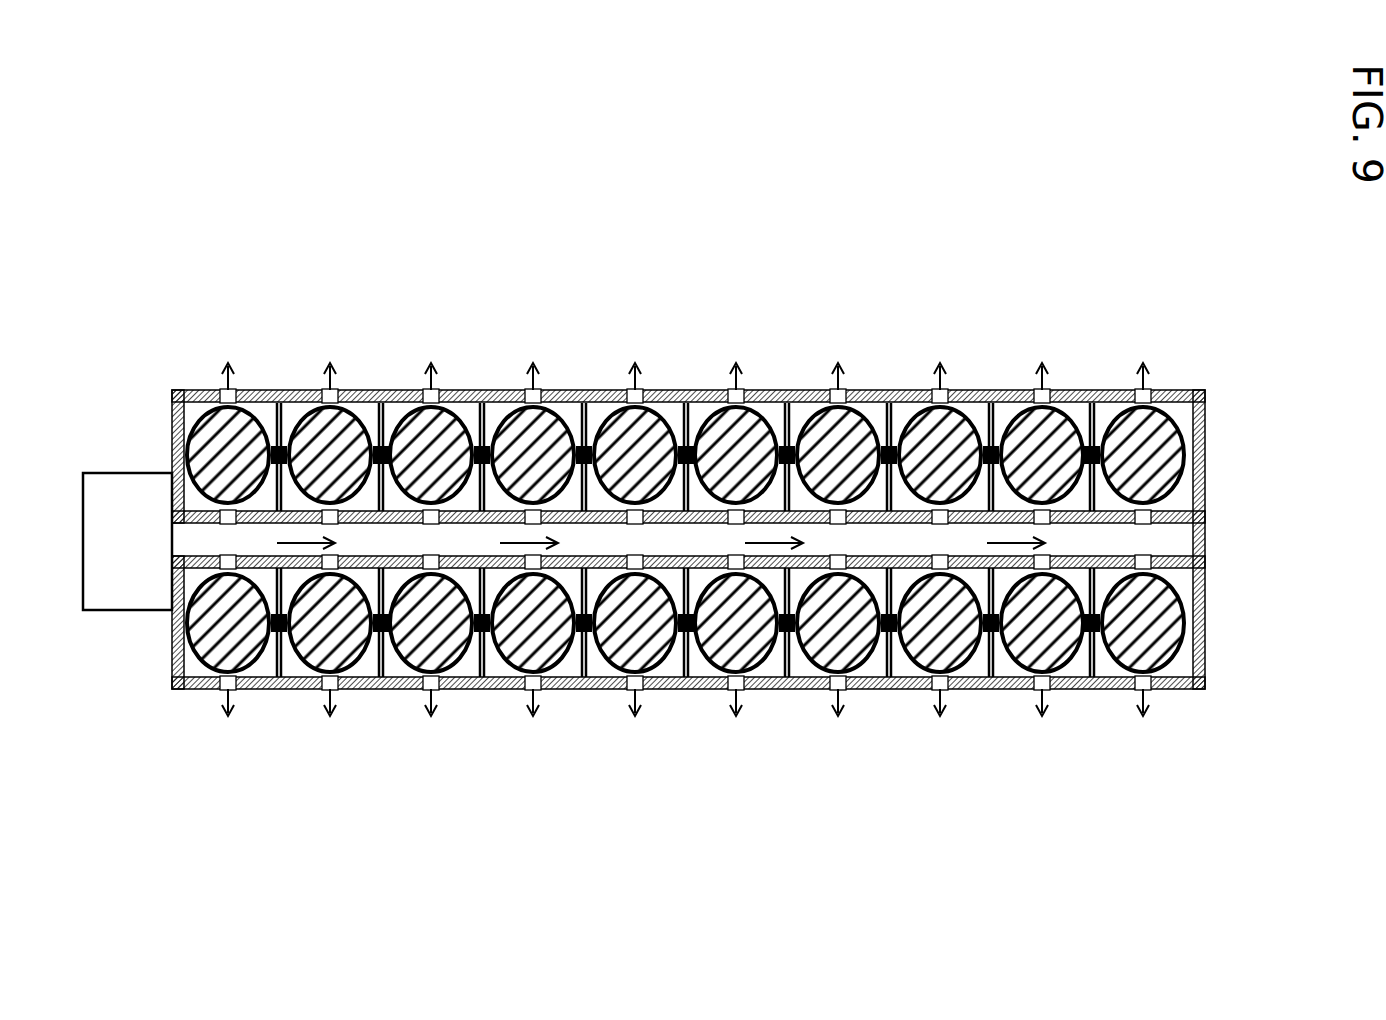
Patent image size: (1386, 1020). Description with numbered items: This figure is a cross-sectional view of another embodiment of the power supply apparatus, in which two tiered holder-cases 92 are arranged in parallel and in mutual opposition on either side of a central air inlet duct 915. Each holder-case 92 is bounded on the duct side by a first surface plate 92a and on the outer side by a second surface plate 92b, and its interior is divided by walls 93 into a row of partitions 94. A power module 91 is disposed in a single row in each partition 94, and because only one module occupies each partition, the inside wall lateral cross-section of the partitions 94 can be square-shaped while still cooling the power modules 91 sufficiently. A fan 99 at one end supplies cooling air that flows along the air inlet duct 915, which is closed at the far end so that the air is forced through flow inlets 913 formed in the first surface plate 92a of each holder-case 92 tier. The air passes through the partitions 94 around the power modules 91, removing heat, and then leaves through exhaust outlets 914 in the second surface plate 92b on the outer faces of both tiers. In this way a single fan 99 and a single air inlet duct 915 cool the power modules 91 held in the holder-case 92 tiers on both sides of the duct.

The power module 91 is at (435, 440).
The holder-case 92 is at (737, 548).
The first surface plate 92a is at (1086, 526).
The second surface plate 92b is at (673, 392).
The wall 93 is at (508, 412).
The partition 94 is at (291, 408).
The flow inlet 913 is at (430, 524).
The exhaust outlet 914 is at (340, 396).
The air inlet duct 915 is at (1172, 546).
The fan 99 is at (112, 472).